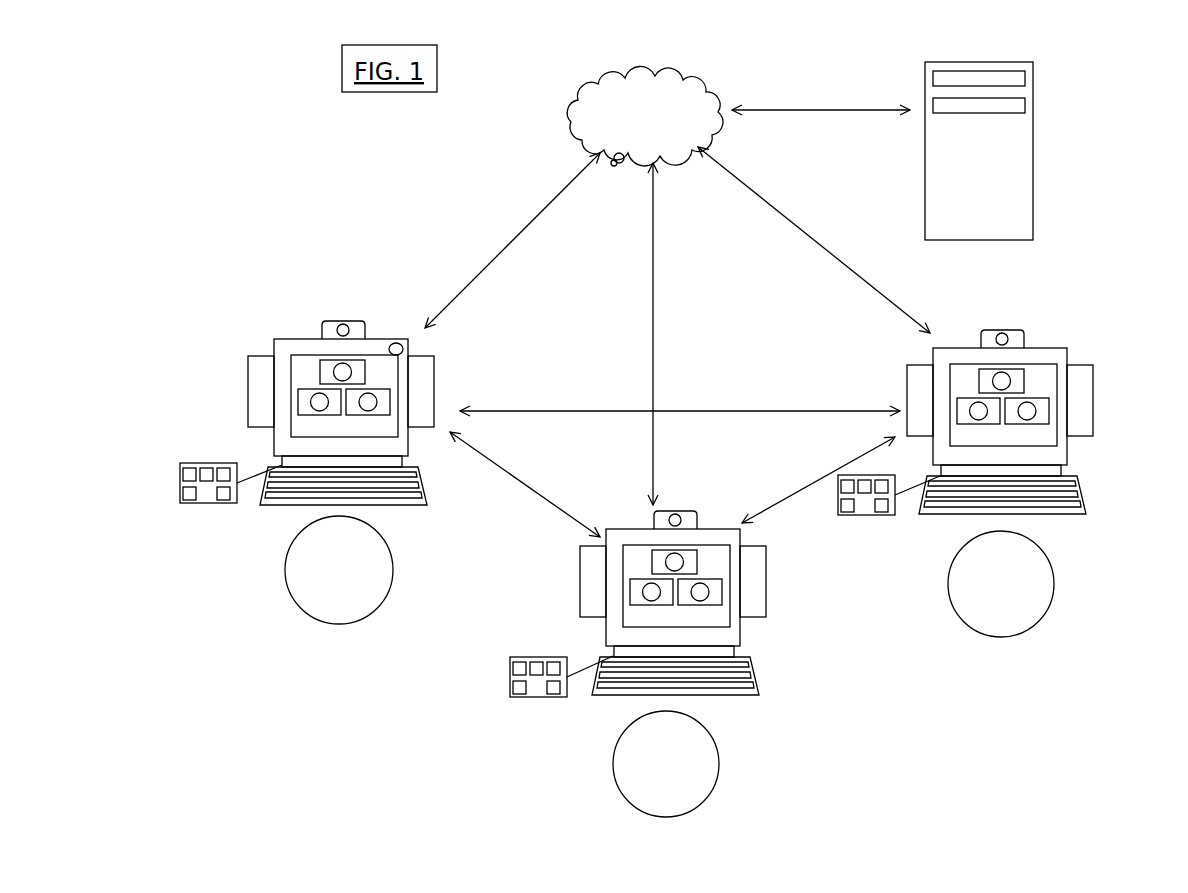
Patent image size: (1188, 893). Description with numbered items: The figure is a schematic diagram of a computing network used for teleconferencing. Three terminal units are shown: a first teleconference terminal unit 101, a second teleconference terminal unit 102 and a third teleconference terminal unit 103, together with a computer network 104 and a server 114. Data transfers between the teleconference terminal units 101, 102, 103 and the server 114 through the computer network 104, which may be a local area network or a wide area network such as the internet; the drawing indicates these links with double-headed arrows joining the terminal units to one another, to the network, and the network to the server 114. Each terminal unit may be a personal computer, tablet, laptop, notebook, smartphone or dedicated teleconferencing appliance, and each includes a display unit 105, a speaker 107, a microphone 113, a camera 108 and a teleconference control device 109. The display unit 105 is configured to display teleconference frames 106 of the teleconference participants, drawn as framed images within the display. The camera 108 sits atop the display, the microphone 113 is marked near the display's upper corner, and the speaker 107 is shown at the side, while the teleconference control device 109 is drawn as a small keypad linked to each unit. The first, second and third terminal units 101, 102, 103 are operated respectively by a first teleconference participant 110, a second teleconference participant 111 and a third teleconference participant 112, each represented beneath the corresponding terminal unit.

The first teleconference terminal unit 101 is at (349, 410).
The second teleconference terminal unit 102 is at (588, 706).
The third teleconference terminal unit 103 is at (910, 528).
The computer network 104 is at (645, 116).
The display unit 105 is at (371, 369).
The teleconference frames 106 is at (391, 427).
The speaker 107 is at (464, 391).
The camera 108 is at (345, 289).
The teleconference control device 109 is at (207, 461).
The first teleconference participant 110 is at (324, 631).
The second teleconference participant 111 is at (628, 813).
The third teleconference participant 112 is at (960, 643).
The microphone 113 is at (405, 309).
The server 114 is at (1042, 120).